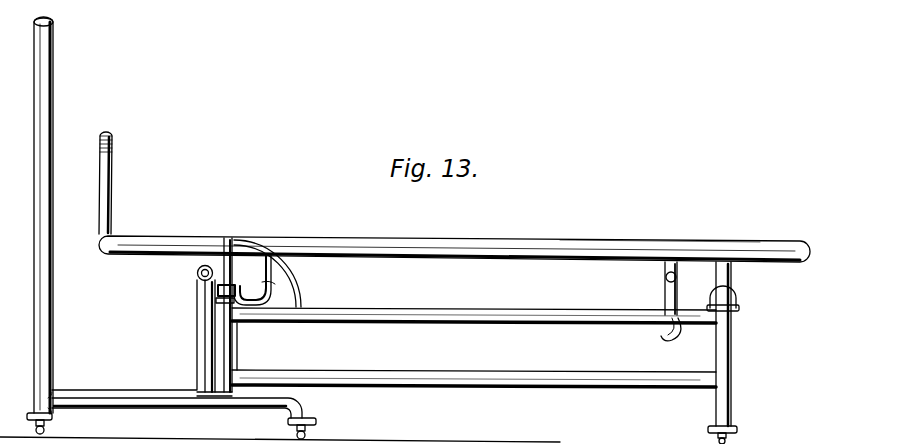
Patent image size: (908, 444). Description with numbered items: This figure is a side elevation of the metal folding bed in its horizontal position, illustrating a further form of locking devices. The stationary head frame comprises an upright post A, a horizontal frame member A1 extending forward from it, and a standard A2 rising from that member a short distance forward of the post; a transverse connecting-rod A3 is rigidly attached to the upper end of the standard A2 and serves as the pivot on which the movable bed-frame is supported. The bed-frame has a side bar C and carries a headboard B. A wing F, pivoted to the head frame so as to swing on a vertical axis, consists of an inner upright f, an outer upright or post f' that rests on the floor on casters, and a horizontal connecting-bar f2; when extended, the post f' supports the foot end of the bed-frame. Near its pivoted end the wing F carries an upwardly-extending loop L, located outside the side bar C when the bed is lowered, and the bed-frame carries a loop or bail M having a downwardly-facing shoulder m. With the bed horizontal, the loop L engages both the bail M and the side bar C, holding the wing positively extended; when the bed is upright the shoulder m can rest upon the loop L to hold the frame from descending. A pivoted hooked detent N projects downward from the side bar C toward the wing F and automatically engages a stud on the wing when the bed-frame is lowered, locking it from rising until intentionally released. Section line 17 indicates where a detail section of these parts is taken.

The upright post A is at (52, 300).
The horizontal frame member A1 is at (182, 415).
The standard A2 is at (132, 390).
The transverse connecting-rod A3 is at (197, 273).
The headboard B is at (114, 183).
The side bar C is at (398, 239).
The section line 17 17 is at (660, 228).
The wing F is at (474, 347).
The inner upright f is at (241, 315).
The horizontal connecting-bar f2 is at (470, 329).
The outer upright or post f' is at (736, 353).
The upwardly-extending loop L is at (302, 277).
The loop or bail M is at (251, 282).
The downwardly-facing shoulder m is at (259, 279).
The hooked detent N is at (660, 291).